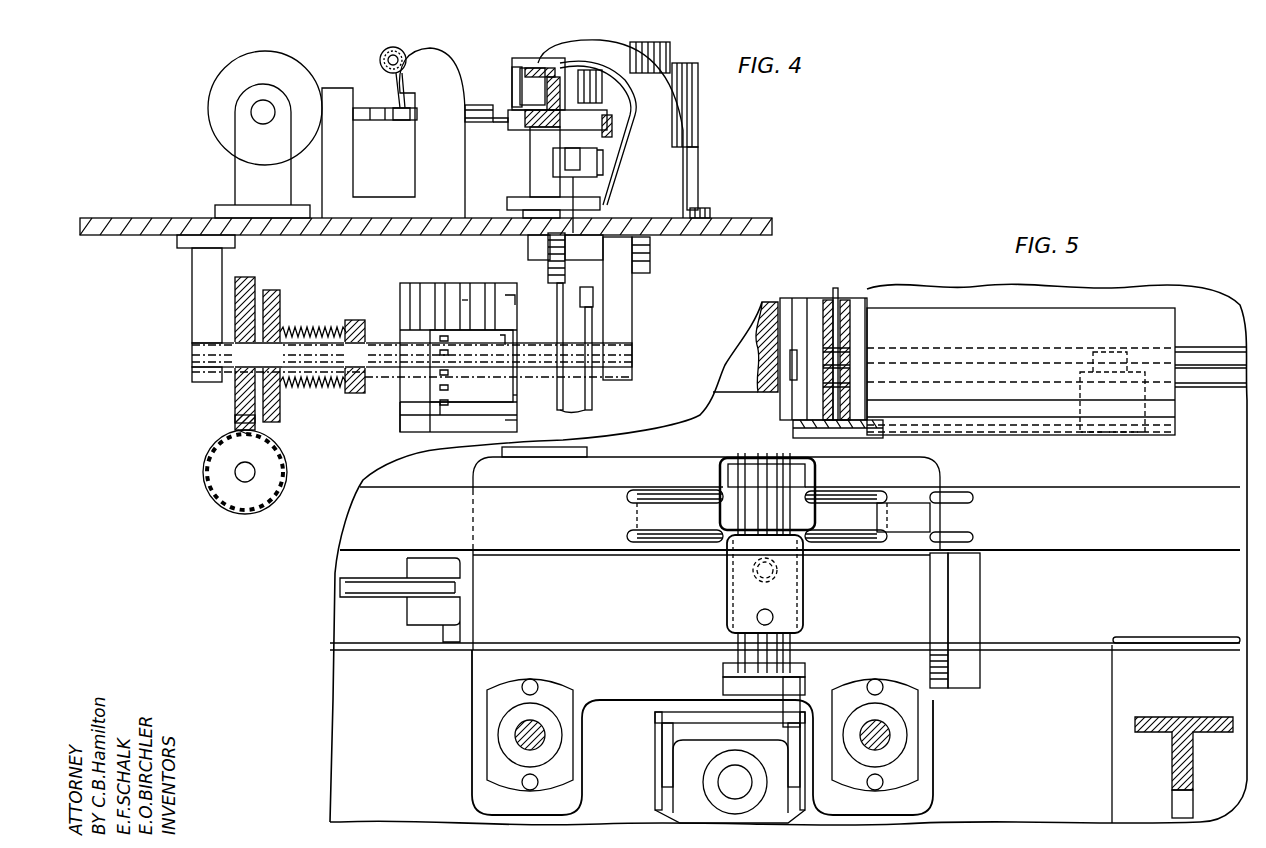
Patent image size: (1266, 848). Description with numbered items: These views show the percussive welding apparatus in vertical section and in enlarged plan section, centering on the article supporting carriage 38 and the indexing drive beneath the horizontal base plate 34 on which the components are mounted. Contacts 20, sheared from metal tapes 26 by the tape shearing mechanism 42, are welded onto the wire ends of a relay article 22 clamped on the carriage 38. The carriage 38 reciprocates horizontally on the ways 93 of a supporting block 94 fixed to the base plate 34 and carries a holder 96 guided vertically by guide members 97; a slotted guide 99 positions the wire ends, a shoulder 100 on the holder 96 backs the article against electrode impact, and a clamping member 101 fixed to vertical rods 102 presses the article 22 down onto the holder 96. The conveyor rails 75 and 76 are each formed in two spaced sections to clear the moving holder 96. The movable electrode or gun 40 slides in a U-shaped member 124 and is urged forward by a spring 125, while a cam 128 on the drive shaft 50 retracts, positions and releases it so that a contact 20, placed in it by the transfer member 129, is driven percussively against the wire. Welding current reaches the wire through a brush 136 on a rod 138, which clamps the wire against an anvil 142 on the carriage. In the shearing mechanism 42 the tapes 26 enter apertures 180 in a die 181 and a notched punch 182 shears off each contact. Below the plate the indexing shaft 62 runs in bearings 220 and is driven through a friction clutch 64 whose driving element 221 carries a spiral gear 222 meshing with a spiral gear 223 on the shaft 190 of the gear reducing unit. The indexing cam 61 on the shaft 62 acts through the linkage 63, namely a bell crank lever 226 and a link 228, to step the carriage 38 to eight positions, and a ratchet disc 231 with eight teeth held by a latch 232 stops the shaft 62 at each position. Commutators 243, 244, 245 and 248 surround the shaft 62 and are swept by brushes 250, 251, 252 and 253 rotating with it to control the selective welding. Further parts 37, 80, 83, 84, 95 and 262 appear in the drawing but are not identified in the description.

In FIG. 4, the contacts 20 is at (505, 100).
In FIG. 4, the relay part or article 22 is at (507, 123).
In FIG. 5, the relay part or article 22 is at (727, 565).
In FIG. 5, the tapes 26 is at (1203, 365).
In FIG. 4, the base plate 34 is at (683, 230).
In FIG. 5, the base plate 34 is at (715, 410).
In FIG. 4, the link 37 is at (490, 112).
In FIG. 4, the carriage 38 is at (603, 165).
In FIG. 5, the carriage 38 is at (468, 662).
In FIG. 4, the movable electrode or gun 40 is at (370, 120).
In FIG. 5, the movable electrode or gun 40 is at (785, 302).
In FIG. 5, the tape shearing mechanism 42 is at (823, 298).
In FIG. 4, the drive shaft 50 is at (253, 115).
In FIG. 4, the indexing cam 61 is at (590, 405).
In FIG. 4, the indexing shaft 62 is at (230, 350).
In FIG. 4, the linkage 63 is at (560, 166).
In FIG. 4, the friction clutch 64 is at (288, 422).
In FIG. 4, the rails 75 is at (525, 140).
In FIG. 5, the rails 75 is at (420, 497).
In FIG. 4, the rails 76 is at (610, 125).
In FIG. 5, the rails 76 is at (683, 646).
In FIG. 4, the arched guide 80 is at (575, 75).
In FIG. 4, the block 83 is at (543, 62).
In FIG. 4, the support 84 is at (690, 165).
In FIG. 5, the support 84 is at (1135, 720).
In FIG. 5, the ways 93 is at (950, 660).
In FIG. 5, the supporting block 94 is at (940, 627).
In FIG. 5, the cylinder 95 is at (1085, 432).
In FIG. 5, the holder 96 is at (805, 607).
In FIG. 5, the guide members 97 is at (778, 570).
In FIG. 5, the slotted guide 99 is at (722, 462).
In FIG. 5, the shoulder 100 is at (758, 627).
In FIG. 4, the clamping member 101 is at (520, 65).
In FIG. 5, the rods 102 is at (513, 735).
In FIG. 4, the U-shaped member 124 is at (425, 160).
In FIG. 5, the U-shaped member 124 is at (758, 345).
In FIG. 4, the spring 125 is at (395, 80).
In FIG. 4, the cam 128 is at (300, 85).
In FIG. 5, the transfer member 129 is at (860, 437).
In FIG. 5, the brush 136 is at (800, 680).
In FIG. 5, the rod 138 is at (718, 778).
In FIG. 5, the anvil 142 is at (723, 675).
In FIG. 5, the apertures 180 is at (850, 355).
In FIG. 5, the die 181 is at (850, 330).
In FIG. 5, the punch 182 is at (840, 292).
In FIG. 4, the shaft 190 is at (250, 470).
In FIG. 4, the bearings 220 is at (197, 285).
In FIG. 4, the driving element 221 is at (262, 292).
In FIG. 4, the spiral gear 222 is at (238, 425).
In FIG. 4, the spiral gear 223 is at (212, 448).
In FIG. 4, the bell crank lever 226 is at (573, 190).
In FIG. 5, the link 228 is at (378, 590).
In FIG. 4, the ratchet disc 231 is at (592, 333).
In FIG. 4, the latch 232 is at (595, 297).
In FIG. 4, the commutator 243 is at (412, 305).
In FIG. 4, the commutator 244 is at (412, 410).
In FIG. 4, the commutator 245 is at (462, 300).
In FIG. 4, the commutator 248 is at (508, 398).
In FIG. 4, the brush 250 is at (416, 320).
In FIG. 4, the brush 251 is at (441, 410).
In FIG. 4, the brush 252 is at (500, 340).
In FIG. 4, the brush 253 is at (512, 425).
In FIG. 4, the spring 262 is at (510, 300).